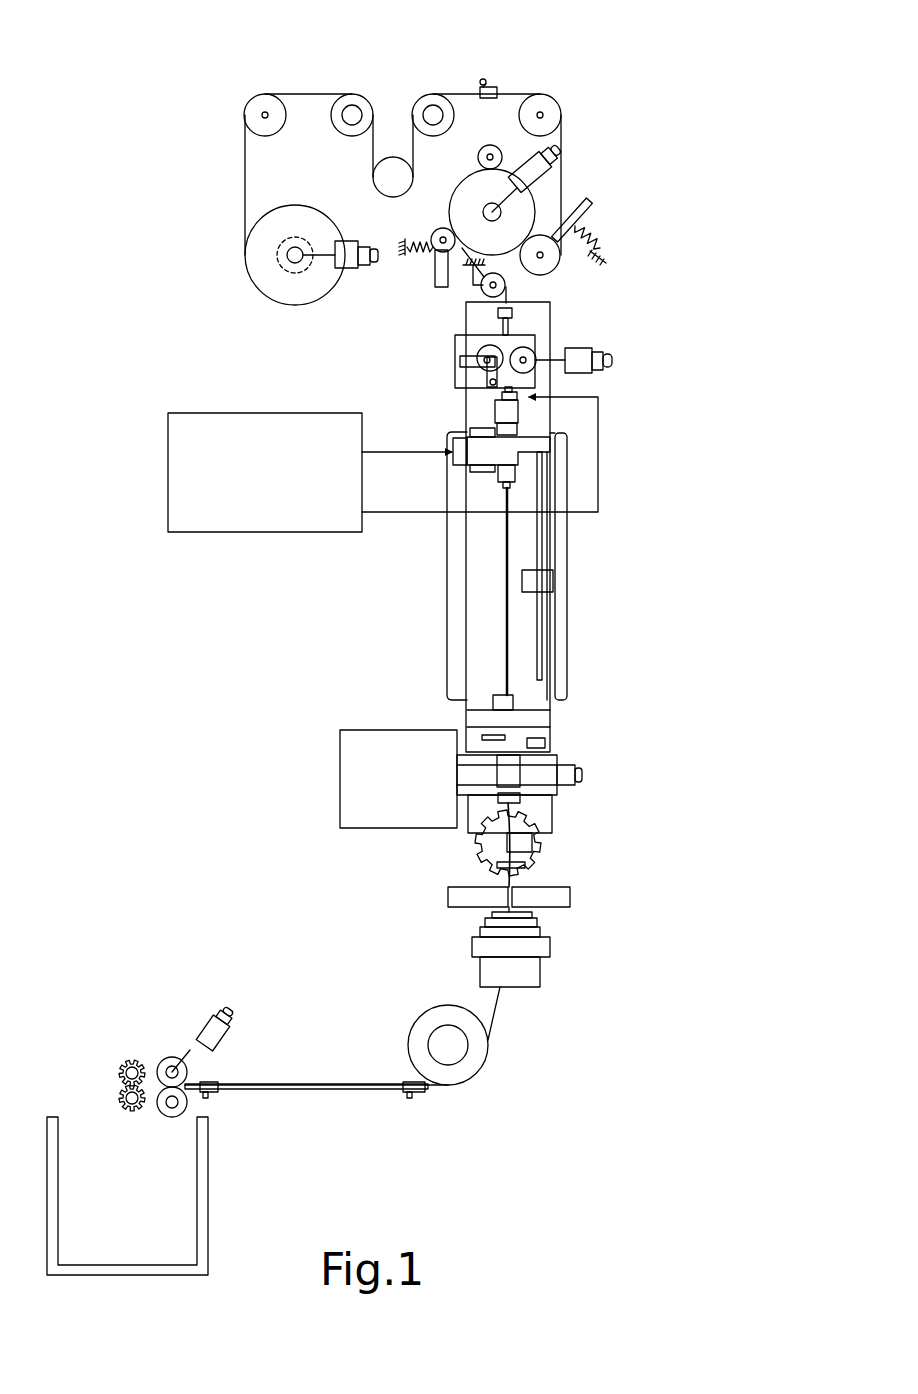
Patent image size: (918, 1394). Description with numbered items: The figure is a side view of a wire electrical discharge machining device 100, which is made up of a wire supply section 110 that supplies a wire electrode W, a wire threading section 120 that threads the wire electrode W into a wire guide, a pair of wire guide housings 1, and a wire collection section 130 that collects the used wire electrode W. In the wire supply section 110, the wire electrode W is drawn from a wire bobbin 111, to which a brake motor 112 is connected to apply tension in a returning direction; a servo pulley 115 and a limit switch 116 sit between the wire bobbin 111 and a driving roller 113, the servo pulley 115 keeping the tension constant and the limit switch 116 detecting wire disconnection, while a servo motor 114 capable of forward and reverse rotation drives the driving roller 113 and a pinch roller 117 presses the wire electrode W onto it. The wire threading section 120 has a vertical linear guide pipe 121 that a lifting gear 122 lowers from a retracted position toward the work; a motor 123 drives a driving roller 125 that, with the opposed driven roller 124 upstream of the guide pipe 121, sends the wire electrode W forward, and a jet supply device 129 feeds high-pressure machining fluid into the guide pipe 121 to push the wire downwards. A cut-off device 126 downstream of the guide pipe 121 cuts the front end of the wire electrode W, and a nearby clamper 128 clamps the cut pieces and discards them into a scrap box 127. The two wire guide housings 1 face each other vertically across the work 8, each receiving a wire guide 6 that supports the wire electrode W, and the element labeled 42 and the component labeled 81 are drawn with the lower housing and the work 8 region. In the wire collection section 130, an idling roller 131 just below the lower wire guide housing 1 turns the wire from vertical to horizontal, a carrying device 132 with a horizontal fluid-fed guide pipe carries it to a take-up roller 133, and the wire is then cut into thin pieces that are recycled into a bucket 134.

The wire electrical discharge machining device 100 is at (172, 257).
The wire supply section 110 is at (334, 66).
The wire bobbin 111 is at (284, 299).
The brake motor 112 is at (356, 266).
The driving roller 113 is at (527, 213).
The servo motor 114 is at (563, 153).
The servo pulley 115 is at (383, 183).
The limit switch 116 is at (493, 82).
The pinch roller 117 is at (433, 233).
The wire threading section 120 is at (374, 624).
The guide pipe 121 is at (502, 563).
The lifting gear 122 is at (548, 542).
The motor 123 is at (595, 346).
The driven roller 124 is at (472, 375).
The driving roller 125 is at (552, 317).
The cut-off device 126 is at (553, 742).
The scrap box 127 is at (380, 730).
The clamper 128 is at (572, 758).
The jet supply device 129 is at (198, 413).
The wire collection section 130 is at (294, 1124).
The idling roller 131 is at (425, 1010).
The carrying device 132 is at (338, 1082).
The take-up roller 133 is at (165, 1062).
The bucket 134 is at (208, 1205).
The wire guide housing 1 is at (477, 850).
The gear 42 is at (543, 842).
The wire guide 6 is at (537, 867).
The work 8 is at (448, 897).
The guide block half 81 is at (570, 897).
The wire electrode W is at (289, 94).